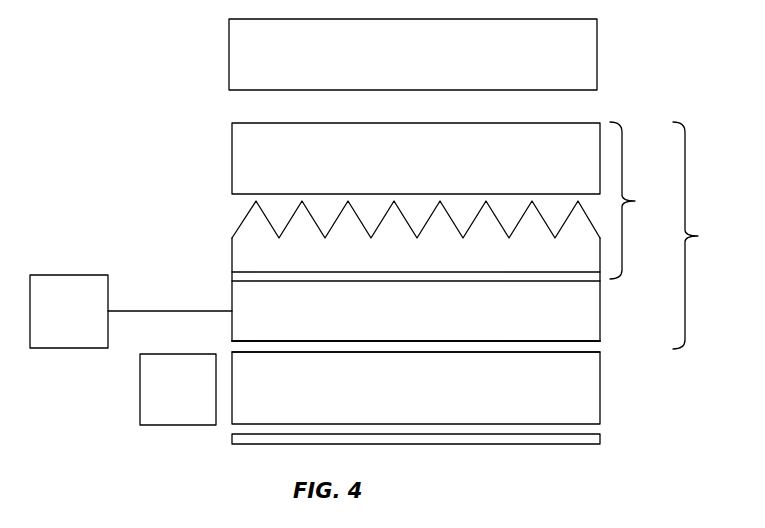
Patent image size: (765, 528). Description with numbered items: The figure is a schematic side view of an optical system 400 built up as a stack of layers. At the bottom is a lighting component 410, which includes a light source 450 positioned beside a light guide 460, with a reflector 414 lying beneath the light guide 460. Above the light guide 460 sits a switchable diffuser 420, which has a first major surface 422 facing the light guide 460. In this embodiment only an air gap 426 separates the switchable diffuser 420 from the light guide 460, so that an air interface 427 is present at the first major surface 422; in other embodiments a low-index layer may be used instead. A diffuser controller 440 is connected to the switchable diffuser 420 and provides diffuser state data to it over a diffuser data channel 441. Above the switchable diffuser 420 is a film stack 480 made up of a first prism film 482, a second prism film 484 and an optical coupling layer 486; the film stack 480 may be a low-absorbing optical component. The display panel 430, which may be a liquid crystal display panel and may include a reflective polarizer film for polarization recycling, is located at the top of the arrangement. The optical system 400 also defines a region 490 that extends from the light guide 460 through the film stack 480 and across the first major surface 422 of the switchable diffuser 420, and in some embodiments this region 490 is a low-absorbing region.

The optical system 400 is at (128, 60).
The display panel 430 is at (580, 43).
The first prism film 482 is at (248, 143).
The second prism film 484 is at (243, 255).
The optical coupling layer 486 is at (240, 275).
The switchable diffuser 420 is at (585, 303).
The first major surface 422 is at (571, 341).
The air interface 427 is at (583, 352).
The air gap 426 is at (527, 347).
The light guide 460 is at (587, 401).
The reflector 414 is at (597, 437).
The diffuser controller 440 is at (70, 325).
The diffuser data channel 441 is at (124, 311).
The light source 450 is at (160, 401).
The lighting component 410 is at (248, 404).
The film stack 480 is at (645, 200).
The region 490 is at (709, 235).